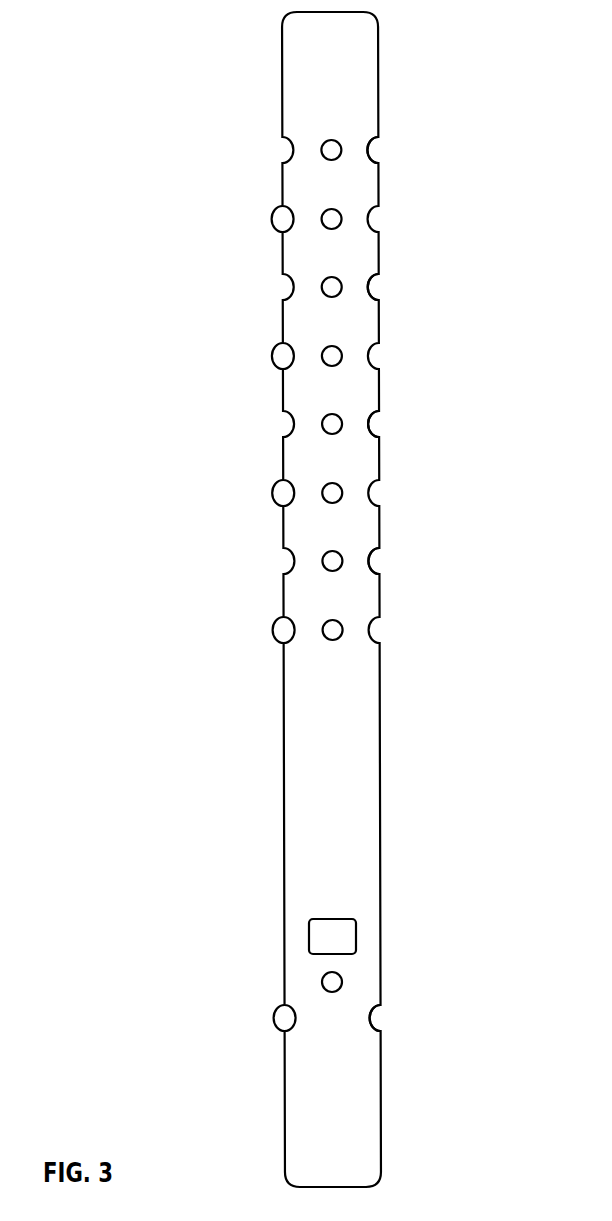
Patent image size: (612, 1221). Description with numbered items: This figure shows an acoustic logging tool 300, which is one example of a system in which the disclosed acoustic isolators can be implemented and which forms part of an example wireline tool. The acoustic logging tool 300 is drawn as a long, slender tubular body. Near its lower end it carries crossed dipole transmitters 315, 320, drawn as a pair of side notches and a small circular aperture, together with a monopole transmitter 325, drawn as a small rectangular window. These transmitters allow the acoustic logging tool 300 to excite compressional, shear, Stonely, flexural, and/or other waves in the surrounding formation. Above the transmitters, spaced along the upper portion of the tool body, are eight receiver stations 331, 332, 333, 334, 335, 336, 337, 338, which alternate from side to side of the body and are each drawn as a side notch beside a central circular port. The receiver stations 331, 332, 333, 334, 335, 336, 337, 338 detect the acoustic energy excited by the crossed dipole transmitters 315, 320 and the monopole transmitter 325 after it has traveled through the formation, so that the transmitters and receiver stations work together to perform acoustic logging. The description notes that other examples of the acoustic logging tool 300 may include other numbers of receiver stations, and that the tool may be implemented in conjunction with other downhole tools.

The acoustic logging tool 300 is at (235, 805).
The crossed dipole transmitter 315 is at (284, 1017).
The crossed dipole transmitter 320 is at (342, 982).
The monopole transmitter 325 is at (346, 935).
The receiver station 331 is at (285, 629).
The receiver station 332 is at (378, 560).
The receiver station 333 is at (284, 492).
The receiver station 334 is at (378, 423).
The receiver station 335 is at (284, 355).
The receiver station 336 is at (378, 286).
The receiver station 337 is at (284, 218).
The receiver station 338 is at (377, 149).